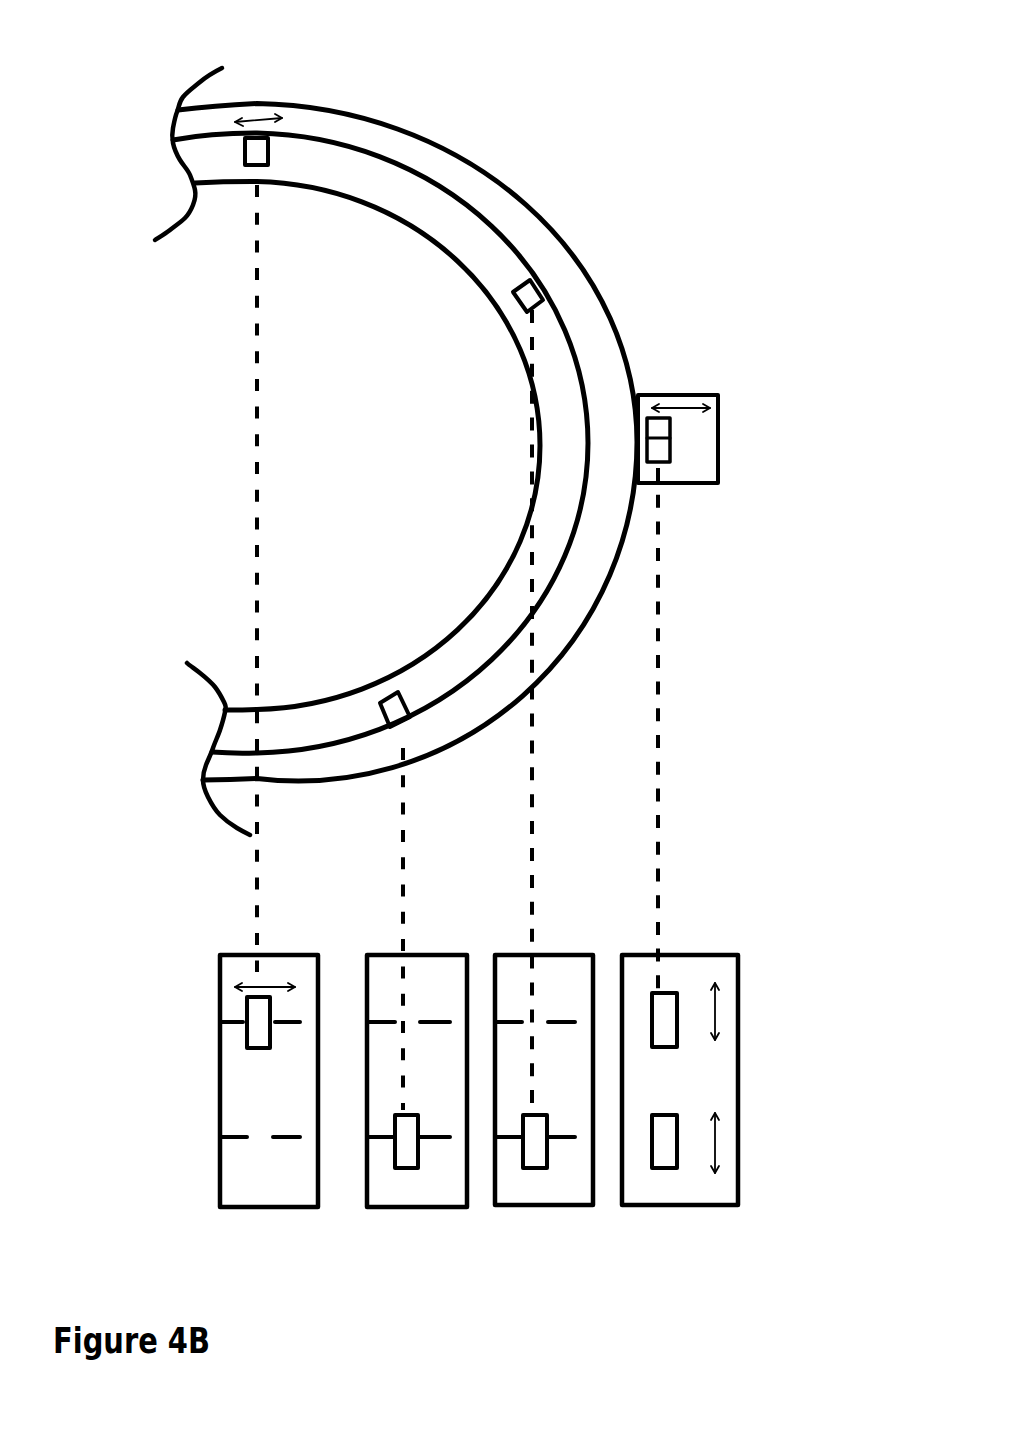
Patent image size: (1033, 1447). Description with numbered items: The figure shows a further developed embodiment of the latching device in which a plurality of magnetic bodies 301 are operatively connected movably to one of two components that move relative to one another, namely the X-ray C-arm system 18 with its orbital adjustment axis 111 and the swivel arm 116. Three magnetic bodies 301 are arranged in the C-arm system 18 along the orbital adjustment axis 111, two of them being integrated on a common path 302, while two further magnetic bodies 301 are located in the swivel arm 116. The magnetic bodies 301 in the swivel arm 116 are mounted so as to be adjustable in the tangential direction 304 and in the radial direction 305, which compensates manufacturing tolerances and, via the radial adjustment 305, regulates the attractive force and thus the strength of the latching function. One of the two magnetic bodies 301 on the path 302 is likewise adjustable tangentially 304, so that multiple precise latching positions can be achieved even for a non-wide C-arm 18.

The X-ray C-arm system 18 is at (563, 230).
The orbital adjustment axis 111 is at (440, 166).
The swivel arm 116 is at (717, 708).
The magnetic body 301 is at (250, 167).
The path 302 is at (218, 1140).
The tangential direction 304 is at (265, 110).
The radial direction 305 is at (683, 396).